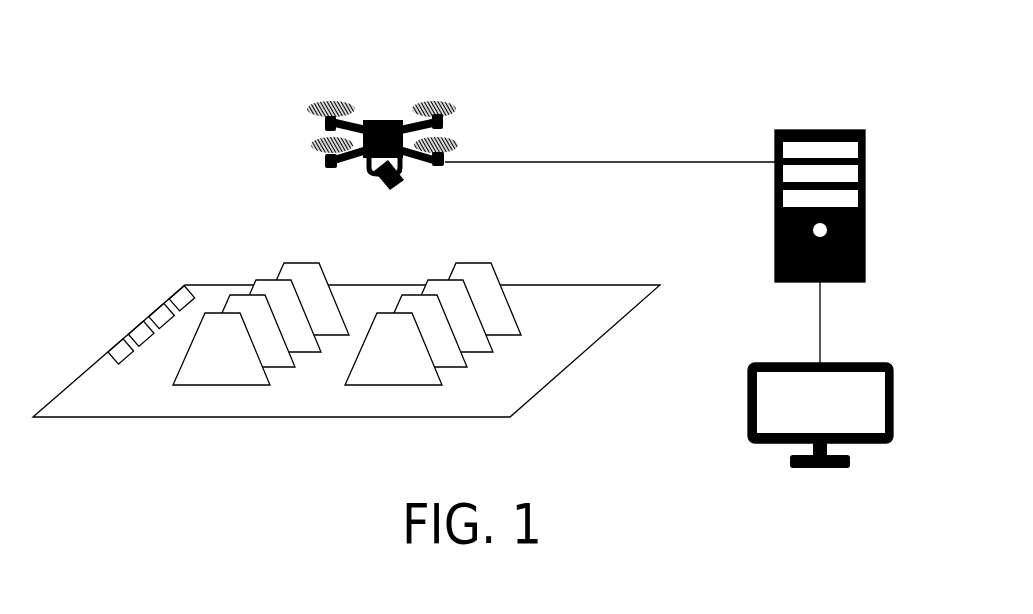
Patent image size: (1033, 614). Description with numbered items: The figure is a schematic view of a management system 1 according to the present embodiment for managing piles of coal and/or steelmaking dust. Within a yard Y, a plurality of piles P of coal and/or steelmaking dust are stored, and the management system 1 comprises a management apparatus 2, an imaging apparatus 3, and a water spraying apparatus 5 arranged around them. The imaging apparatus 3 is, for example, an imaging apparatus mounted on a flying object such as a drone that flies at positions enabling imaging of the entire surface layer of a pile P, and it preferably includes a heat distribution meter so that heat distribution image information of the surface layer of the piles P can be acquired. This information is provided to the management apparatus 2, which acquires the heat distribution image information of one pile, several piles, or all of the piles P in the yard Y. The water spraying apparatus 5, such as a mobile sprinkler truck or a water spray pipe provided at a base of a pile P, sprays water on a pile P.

The management system 1 is at (650, 48).
The management apparatus 2 is at (865, 130).
The imaging apparatus 3 is at (459, 108).
The water spraying apparatus 5 is at (177, 292).
The pile P is at (287, 263).
The yard Y is at (632, 284).